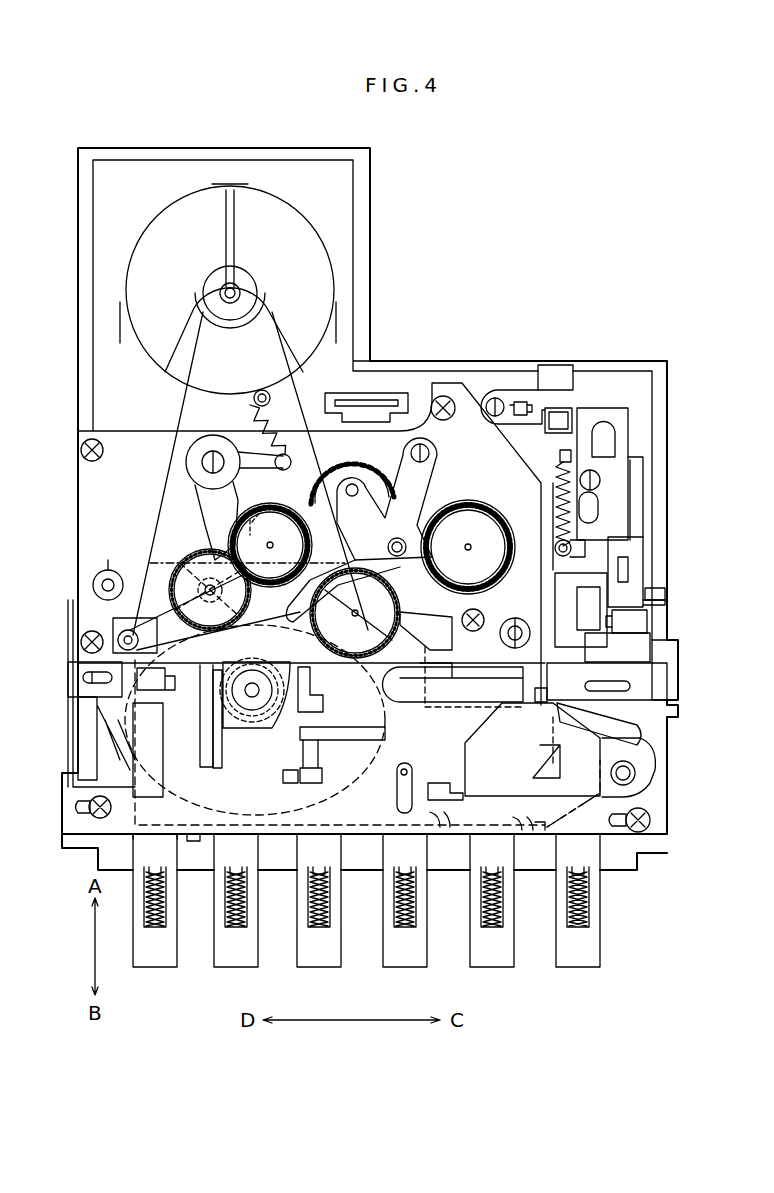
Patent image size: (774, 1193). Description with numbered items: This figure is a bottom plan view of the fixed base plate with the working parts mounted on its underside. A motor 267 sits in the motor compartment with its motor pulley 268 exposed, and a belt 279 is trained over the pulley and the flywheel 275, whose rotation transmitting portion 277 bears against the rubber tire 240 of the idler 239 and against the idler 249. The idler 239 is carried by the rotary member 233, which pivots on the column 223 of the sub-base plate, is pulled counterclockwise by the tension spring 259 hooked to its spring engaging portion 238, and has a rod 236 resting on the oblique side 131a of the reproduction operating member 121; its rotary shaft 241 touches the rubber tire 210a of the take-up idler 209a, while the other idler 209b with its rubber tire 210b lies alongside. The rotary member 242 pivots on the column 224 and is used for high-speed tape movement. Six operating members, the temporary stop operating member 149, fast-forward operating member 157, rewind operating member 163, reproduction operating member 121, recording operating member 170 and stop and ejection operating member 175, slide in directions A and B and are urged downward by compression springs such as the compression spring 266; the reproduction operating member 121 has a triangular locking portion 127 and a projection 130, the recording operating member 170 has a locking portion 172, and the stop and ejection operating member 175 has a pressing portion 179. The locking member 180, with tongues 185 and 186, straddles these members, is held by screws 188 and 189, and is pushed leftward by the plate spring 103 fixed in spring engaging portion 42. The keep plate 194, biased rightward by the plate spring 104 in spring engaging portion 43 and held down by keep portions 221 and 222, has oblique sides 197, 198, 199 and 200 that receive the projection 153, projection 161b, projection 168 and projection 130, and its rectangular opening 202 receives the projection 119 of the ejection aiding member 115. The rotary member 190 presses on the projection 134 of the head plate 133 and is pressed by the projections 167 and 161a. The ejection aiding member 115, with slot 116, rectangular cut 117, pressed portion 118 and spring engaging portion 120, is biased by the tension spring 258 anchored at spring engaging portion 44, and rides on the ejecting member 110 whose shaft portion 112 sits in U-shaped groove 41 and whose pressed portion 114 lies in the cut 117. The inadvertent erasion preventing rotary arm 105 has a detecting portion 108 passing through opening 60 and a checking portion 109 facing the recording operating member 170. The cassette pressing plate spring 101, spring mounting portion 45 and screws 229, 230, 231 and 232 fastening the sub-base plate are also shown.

The U-shaped groove 41 is at (662, 597).
The spring engaging portion 42 is at (672, 662).
The spring engaging portion 43 is at (62, 835).
The spring engaging portion 44 is at (582, 550).
The spring mounting portion 45 is at (271, 402).
The opening 60 is at (560, 378).
The cassette pressing plate spring 101 is at (362, 413).
The plate spring 103 is at (682, 822).
The plate spring 104 is at (67, 680).
The inadvertent erasion preventing rotary arm 105 is at (532, 392).
The detecting portion 108 is at (560, 420).
The checking portion 109 is at (500, 397).
The ejecting member 110 is at (626, 622).
The columnar shaft portion 112 is at (650, 592).
The pressed portion 114 is at (628, 565).
The ejection aiding member 115 is at (622, 470).
The slot 116 is at (594, 488).
The rectangular cut 117 is at (596, 514).
The pressed portion 118 is at (580, 628).
The projection 119 is at (585, 612).
The spring engaging portion 120 is at (562, 455).
The reproduction operating member 121 is at (403, 967).
The triangular locking portion 127 is at (446, 834).
The projection 130 is at (453, 677).
The oblique side 131a is at (72, 660).
The head plate 133 is at (645, 755).
The projection 134 is at (636, 774).
The temporary stop operating member 149 is at (157, 967).
The projection 153 is at (200, 740).
The fast-forward operating member 157 is at (237, 967).
The projection 161a is at (292, 783).
The projection 161b is at (325, 696).
The rewind operating member 163 is at (318, 967).
The projection 167 is at (320, 780).
The projection 168 is at (392, 716).
The recording operating member 170 is at (495, 967).
The locking portion 172 is at (530, 834).
The stop and ejection operating member 175 is at (575, 967).
The pressing portion 179 is at (596, 646).
The locking member 180 is at (293, 834).
The tongue 185 is at (448, 790).
The tongue 186 is at (547, 763).
The screw 188 is at (113, 792).
The screw 189 is at (632, 833).
The rotary member 190 is at (445, 735).
The keep plate 194 is at (605, 718).
The oblique side 197 is at (175, 668).
The oblique side 198 is at (345, 640).
The oblique side 199 is at (355, 613).
The oblique side 200 is at (440, 650).
The rectangular opening 202 is at (600, 702).
The idler 209a is at (297, 495).
The idler 209b is at (485, 525).
The rubber tire 210a is at (256, 505).
The rubber tire 210b is at (462, 503).
The keep portion 221 is at (147, 690).
The keep portion 222 is at (557, 689).
The column 223 is at (212, 475).
The column 224 is at (427, 452).
The screw 229 is at (100, 460).
The screw 230 is at (82, 636).
The screw 231 is at (482, 622).
The screw 232 is at (443, 396).
The rotary member 233 is at (212, 515).
The rod 236 is at (132, 620).
The spring engaging portion 238 is at (290, 458).
The idler 239 is at (203, 552).
The rubber tire 240 is at (170, 575).
The rotary shaft 241 is at (262, 529).
The rotary member 242 is at (432, 470).
The idler 249 is at (388, 600).
The tension spring 258 is at (560, 468).
The tension spring 259 is at (252, 412).
The compression spring 266 is at (590, 905).
The motor 267 is at (192, 296).
The motor pulley 268 is at (245, 288).
The flywheel 275 is at (362, 726).
The rotation transmitting portion 277 is at (238, 760).
The belt 279 is at (272, 326).